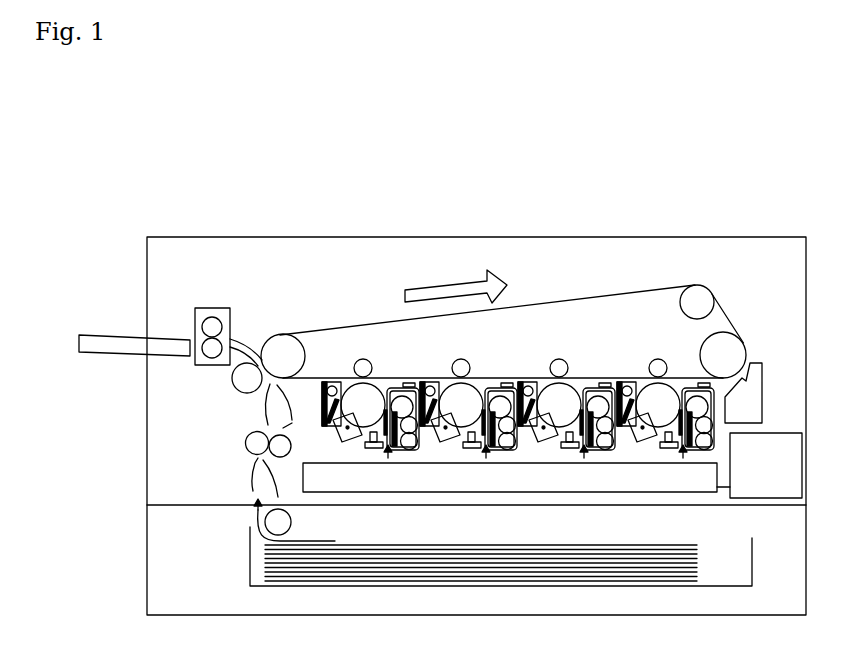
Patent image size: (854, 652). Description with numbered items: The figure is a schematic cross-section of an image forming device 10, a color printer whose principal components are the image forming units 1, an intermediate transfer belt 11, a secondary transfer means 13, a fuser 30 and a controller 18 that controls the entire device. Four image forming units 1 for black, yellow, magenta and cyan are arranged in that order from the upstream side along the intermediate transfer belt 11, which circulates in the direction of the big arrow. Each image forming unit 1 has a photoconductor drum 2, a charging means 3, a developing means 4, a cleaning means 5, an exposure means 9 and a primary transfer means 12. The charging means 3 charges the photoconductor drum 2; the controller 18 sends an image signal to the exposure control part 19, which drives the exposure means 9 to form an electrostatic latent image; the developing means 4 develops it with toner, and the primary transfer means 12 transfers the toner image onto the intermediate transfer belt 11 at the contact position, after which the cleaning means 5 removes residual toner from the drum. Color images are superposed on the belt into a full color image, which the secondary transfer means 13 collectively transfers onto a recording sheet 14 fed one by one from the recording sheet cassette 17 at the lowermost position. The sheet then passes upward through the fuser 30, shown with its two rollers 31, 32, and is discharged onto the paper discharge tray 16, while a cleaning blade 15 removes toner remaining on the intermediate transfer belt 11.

The image forming unit 1 is at (355, 353).
The photoconductor drum 2 is at (353, 384).
The charging means 3 is at (494, 437).
The developing means 4 is at (394, 385).
The cleaning means 5 is at (331, 382).
The exposure means 9 is at (519, 449).
The image forming device 10 is at (360, 218).
The intermediate transfer belt 11 is at (612, 294).
The primary transfer means 12 is at (369, 366).
The secondary transfer means 13 is at (238, 389).
The recording sheet 14 is at (340, 580).
The cleaning blade 15 is at (750, 363).
The paper discharge tray 16 is at (90, 335).
The recording sheet cassette 17 is at (250, 556).
The controller 18 is at (759, 465).
The exposure control part 19 is at (510, 477).
The fuser 30 is at (210, 302).
The heating roller 31 is at (196, 322).
The pressure roller 32 is at (203, 353).